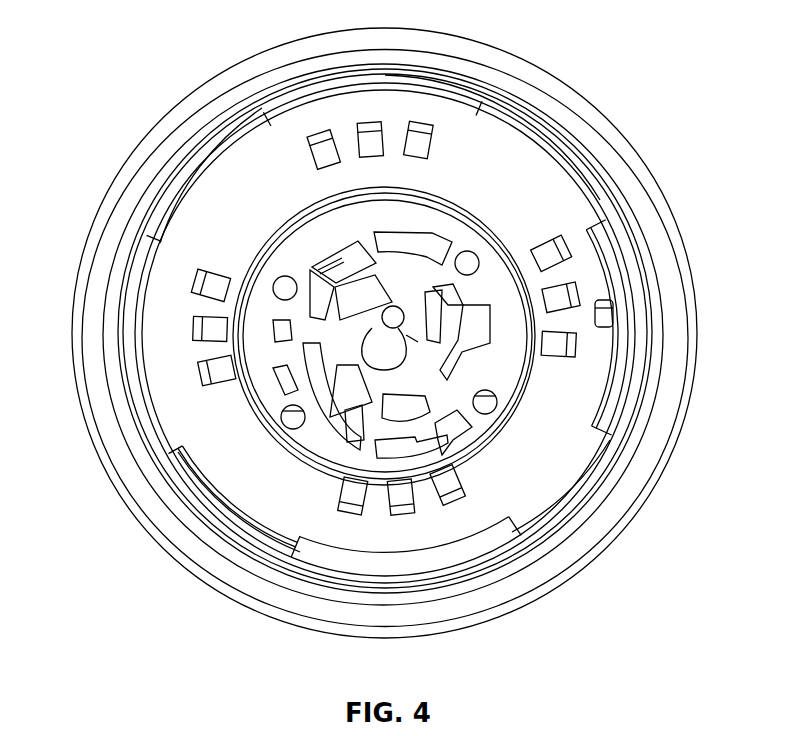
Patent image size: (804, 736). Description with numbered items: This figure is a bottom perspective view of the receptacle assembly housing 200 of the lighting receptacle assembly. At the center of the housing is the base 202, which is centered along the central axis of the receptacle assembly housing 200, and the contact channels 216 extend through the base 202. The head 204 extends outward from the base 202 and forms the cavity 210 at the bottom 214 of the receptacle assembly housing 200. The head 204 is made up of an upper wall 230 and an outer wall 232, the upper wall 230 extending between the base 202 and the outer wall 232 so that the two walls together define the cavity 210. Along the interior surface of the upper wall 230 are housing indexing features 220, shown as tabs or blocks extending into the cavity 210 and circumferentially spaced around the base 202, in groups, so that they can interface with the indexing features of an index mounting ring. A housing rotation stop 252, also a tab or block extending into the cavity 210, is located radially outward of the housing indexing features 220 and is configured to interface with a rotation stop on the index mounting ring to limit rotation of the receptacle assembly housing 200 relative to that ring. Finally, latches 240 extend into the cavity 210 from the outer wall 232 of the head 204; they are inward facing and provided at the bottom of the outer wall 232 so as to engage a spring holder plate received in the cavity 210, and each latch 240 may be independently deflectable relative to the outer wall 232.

The receptacle assembly housing 200 is at (614, 68).
The base 202 is at (485, 213).
The head 204 is at (640, 493).
The cavity 210 is at (566, 430).
The bottom 214 is at (266, 395).
The contact channels 216 is at (328, 422).
The housing indexing features 220 is at (308, 134).
The upper wall 230 is at (600, 378).
The outer wall 232 is at (617, 350).
The latches 240 is at (497, 127).
The housing rotation stop 252 is at (614, 312).